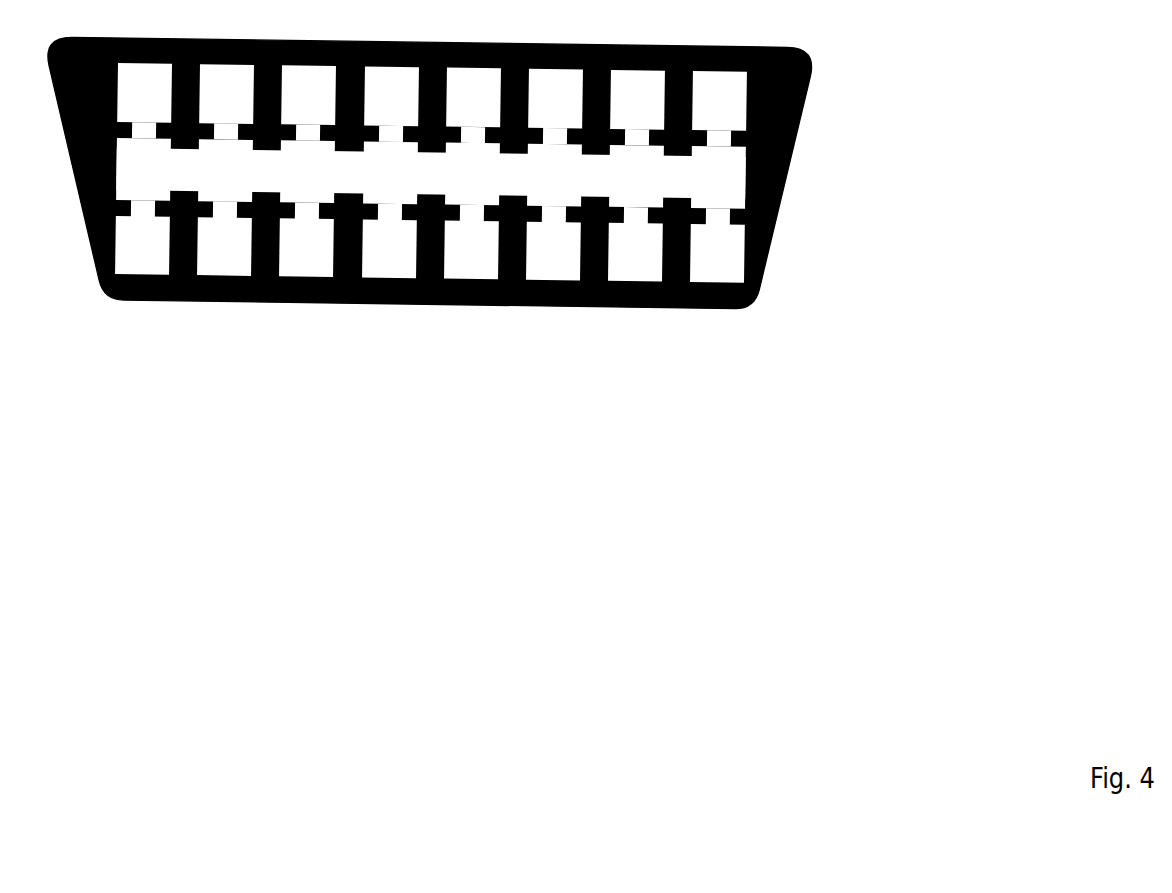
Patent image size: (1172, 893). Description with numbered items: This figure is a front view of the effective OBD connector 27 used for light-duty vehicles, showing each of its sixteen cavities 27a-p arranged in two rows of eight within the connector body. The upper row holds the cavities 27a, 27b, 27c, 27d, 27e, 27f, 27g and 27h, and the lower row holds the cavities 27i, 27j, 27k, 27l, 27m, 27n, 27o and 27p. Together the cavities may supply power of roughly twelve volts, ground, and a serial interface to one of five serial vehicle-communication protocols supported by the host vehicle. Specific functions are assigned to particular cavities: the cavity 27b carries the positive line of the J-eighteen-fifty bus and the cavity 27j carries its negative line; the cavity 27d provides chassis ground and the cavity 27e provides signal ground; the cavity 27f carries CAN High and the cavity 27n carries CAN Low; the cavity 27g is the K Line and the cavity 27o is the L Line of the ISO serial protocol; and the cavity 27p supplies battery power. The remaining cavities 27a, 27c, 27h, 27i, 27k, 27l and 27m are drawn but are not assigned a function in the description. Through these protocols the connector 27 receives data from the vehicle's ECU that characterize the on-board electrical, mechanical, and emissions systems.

The effective OBD connector 27 is at (790, 183).
The cavity 27a is at (163, 118).
The cavity 27b is at (245, 118).
The cavity 27c is at (327, 118).
The cavity 27d is at (410, 118).
The cavity 27e is at (492, 118).
The cavity 27f is at (574, 118).
The cavity 27g is at (656, 118).
The cavity 27h is at (738, 118).
The cavity 27i is at (163, 254).
The cavity 27j is at (245, 254).
The cavity 27k is at (327, 254).
The cavity 27l is at (410, 254).
The cavity 27m is at (492, 254).
The cavity 27n is at (574, 254).
The cavity 27o is at (656, 254).
The cavity 27p is at (738, 254).